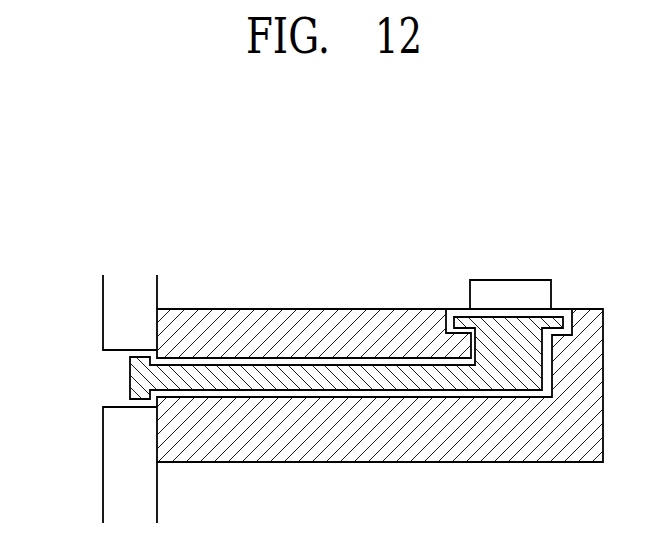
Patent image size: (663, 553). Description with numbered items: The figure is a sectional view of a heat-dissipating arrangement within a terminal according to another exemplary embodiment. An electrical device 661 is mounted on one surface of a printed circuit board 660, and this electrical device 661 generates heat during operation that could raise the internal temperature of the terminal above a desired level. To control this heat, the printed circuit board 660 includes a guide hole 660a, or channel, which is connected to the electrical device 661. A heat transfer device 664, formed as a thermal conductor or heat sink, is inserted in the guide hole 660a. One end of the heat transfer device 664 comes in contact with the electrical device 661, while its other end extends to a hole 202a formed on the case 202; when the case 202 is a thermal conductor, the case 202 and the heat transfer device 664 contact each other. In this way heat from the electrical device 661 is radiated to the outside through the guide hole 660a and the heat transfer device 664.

The case 202 is at (112, 453).
The hole 202a is at (112, 376).
The printed circuit board 660 is at (523, 447).
The guide hole 660a is at (378, 366).
The electrical device 661 is at (508, 290).
The heat transfer device 664 is at (308, 373).